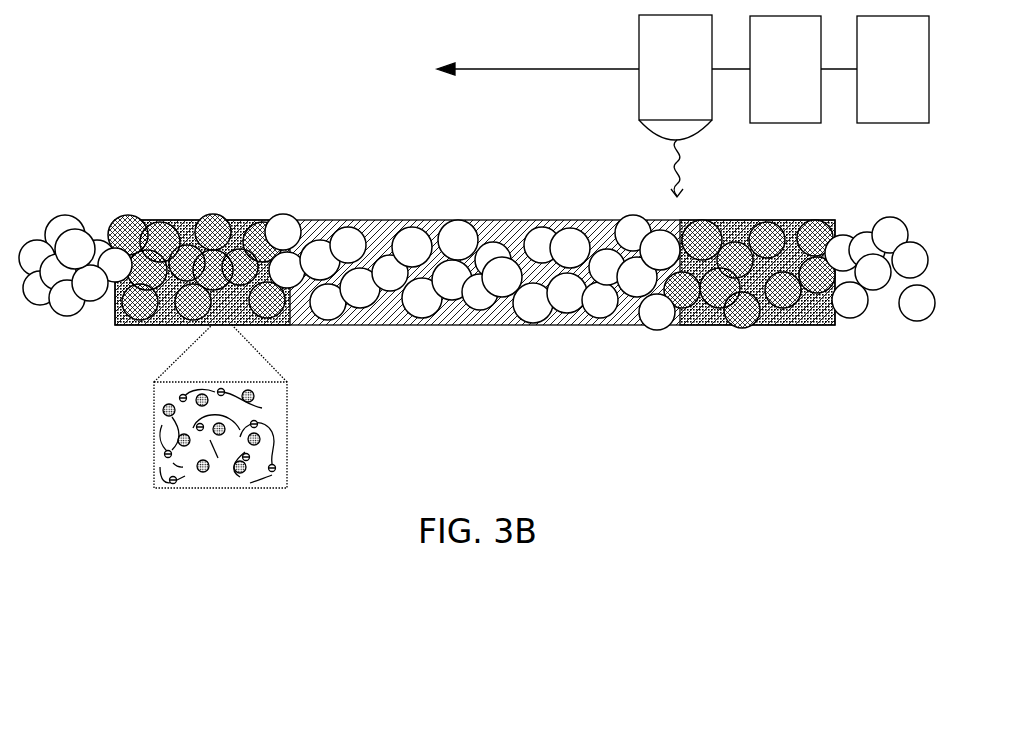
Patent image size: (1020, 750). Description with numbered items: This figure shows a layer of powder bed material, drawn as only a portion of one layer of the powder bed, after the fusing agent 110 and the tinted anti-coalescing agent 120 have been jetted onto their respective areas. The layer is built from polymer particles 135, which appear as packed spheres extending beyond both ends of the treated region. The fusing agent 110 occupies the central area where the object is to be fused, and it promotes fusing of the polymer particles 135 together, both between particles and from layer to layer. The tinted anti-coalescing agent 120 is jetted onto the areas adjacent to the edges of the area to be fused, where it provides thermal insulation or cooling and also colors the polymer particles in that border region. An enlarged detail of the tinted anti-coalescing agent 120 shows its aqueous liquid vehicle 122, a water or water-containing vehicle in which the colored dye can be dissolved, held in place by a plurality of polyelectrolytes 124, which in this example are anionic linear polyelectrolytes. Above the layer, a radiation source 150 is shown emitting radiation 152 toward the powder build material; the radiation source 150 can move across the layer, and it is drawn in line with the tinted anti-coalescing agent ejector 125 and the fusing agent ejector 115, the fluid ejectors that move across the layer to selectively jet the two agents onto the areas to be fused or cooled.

The fusing agent 110 is at (365, 222).
The tinted anti-coalescing agent 120 is at (245, 222).
The polymer particles 135 is at (66, 220).
The aqueous liquid vehicle 122 is at (255, 399).
The polyelectrolytes 124 is at (267, 430).
The radiation source 150 is at (695, 79).
The tinted anti-coalescing agent ejector 125 is at (804, 79).
The fusing agent ejector 115 is at (911, 79).
The radiation 152 is at (668, 186).